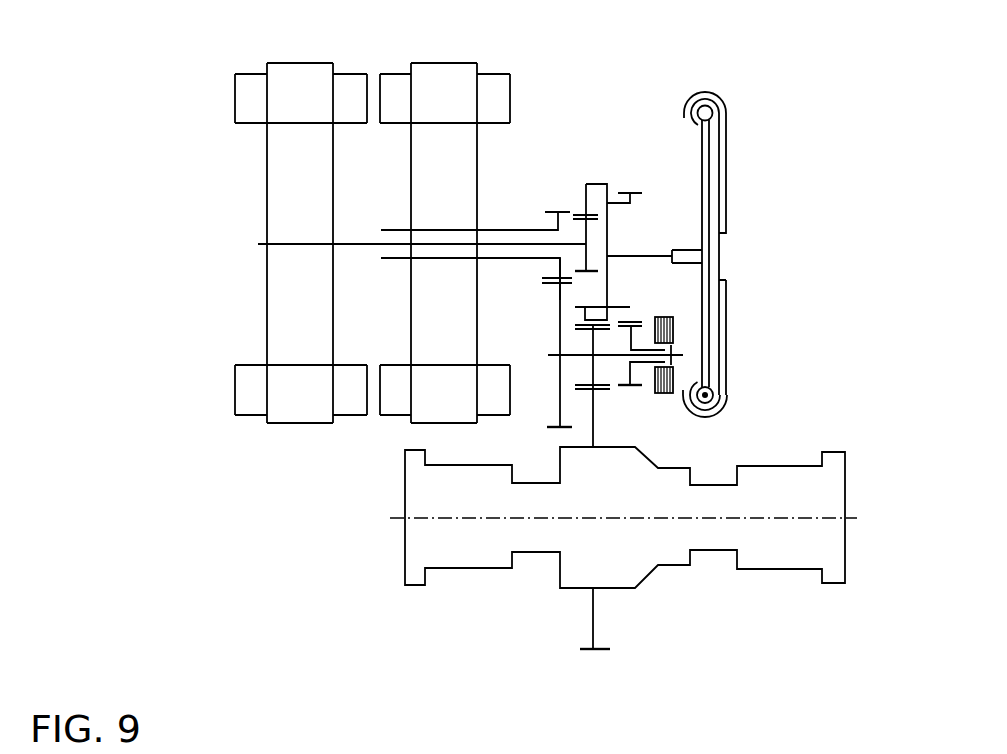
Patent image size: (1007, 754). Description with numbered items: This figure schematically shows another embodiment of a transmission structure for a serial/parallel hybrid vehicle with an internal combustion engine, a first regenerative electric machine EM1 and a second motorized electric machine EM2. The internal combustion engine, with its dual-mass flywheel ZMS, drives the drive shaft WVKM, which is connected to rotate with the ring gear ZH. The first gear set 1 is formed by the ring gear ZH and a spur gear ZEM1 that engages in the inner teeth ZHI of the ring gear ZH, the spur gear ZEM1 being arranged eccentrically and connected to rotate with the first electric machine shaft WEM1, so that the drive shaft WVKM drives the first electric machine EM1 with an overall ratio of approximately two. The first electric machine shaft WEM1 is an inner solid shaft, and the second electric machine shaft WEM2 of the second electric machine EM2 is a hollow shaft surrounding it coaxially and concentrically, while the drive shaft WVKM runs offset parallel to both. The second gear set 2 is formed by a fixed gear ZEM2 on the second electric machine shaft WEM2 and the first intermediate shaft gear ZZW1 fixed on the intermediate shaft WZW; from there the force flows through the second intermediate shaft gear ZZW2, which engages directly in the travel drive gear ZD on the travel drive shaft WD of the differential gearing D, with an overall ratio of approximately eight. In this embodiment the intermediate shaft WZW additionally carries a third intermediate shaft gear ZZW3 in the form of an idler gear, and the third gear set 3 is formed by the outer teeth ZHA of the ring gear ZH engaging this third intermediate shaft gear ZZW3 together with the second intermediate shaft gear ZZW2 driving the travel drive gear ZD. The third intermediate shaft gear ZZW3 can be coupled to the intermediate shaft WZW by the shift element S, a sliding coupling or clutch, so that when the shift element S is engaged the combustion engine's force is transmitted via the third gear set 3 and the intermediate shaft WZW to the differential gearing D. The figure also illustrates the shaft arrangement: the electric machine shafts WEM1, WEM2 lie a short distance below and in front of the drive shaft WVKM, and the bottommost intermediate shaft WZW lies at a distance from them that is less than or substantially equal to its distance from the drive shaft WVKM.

The first gear set 1 is at (575, 203).
The second gear set 2 is at (560, 267).
The third gear set 3 is at (637, 338).
The first regenerative electric machine EM1 is at (301, 243).
The second motorized electric machine EM2 is at (445, 243).
The first electric machine shaft WEM1 is at (258, 244).
The second electric machine shaft WEM2 is at (392, 258).
The spur gear ZEM1 is at (586, 257).
The gear ZEM2 is at (546, 295).
The ring gear ZH is at (599, 184).
The inner teeth ZHI is at (586, 205).
The outer teeth ZHA is at (630, 313).
The dual-mass flywheel ZMS is at (705, 113).
The drive shaft WVKM is at (651, 256).
The shift element S is at (662, 332).
The first intermediate shaft gear ZZW1 is at (559, 327).
The second intermediate shaft gear ZZW2 is at (593, 368).
The third intermediate shaft gear ZZW3 is at (630, 377).
The intermediate shaft WZW is at (577, 355).
The differential gearing D is at (807, 511).
The travel drive shaft WD is at (451, 518).
The travel drive gear ZD is at (593, 427).